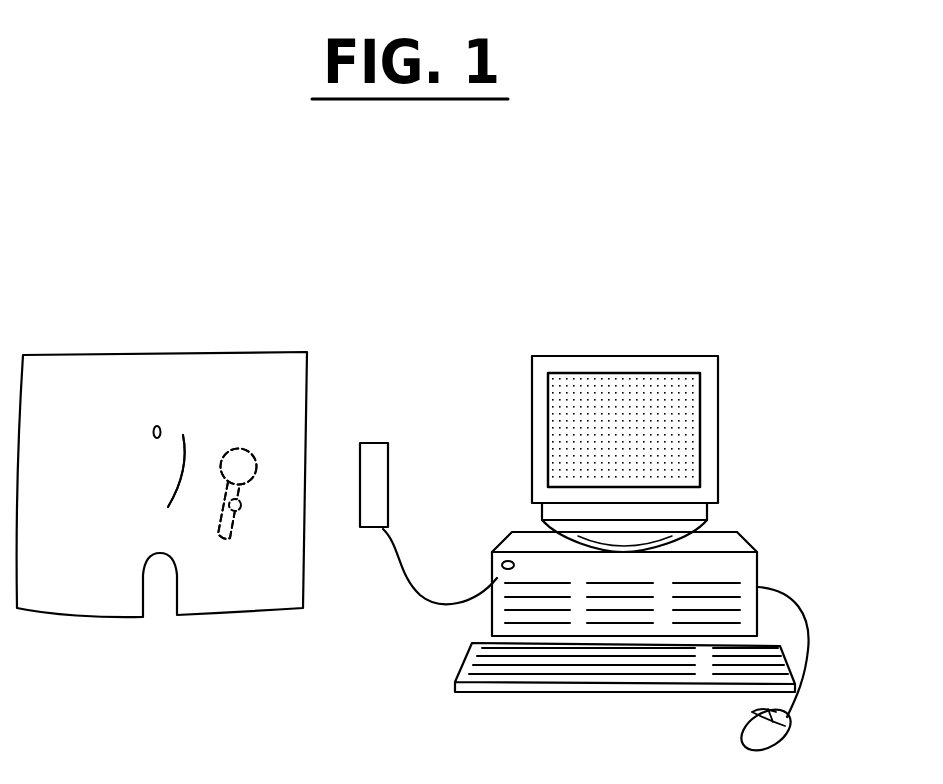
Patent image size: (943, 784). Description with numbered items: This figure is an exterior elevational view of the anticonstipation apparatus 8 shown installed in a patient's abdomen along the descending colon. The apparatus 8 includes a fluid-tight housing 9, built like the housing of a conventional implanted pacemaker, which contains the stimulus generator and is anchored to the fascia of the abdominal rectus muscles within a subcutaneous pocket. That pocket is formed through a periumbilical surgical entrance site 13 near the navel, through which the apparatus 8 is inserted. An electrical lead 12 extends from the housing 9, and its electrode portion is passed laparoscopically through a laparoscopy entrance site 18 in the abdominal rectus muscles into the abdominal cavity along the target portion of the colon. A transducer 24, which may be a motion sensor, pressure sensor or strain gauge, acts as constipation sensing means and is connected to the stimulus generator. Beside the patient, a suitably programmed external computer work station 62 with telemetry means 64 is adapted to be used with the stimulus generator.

The anticonstipation apparatus 8 is at (235, 410).
The housing 9 is at (257, 463).
The electrical lead 12 is at (222, 524).
The periumbilical surgical entrance site 13 is at (182, 472).
The laparoscopy entrance site 18 is at (106, 471).
The transducer 24 is at (245, 507).
The telemetry means 64 is at (380, 475).
The external computer work station 62 is at (752, 563).